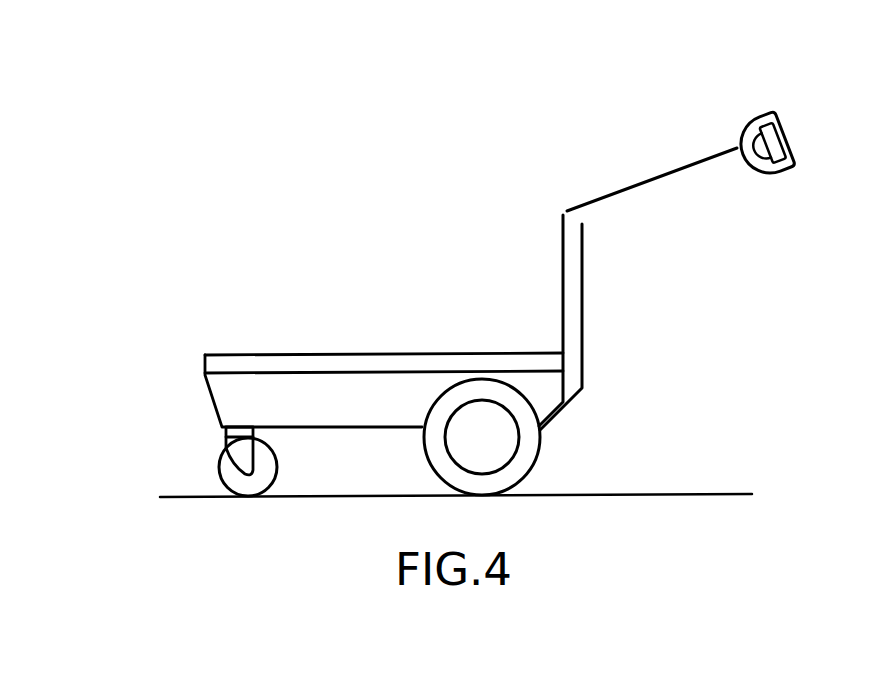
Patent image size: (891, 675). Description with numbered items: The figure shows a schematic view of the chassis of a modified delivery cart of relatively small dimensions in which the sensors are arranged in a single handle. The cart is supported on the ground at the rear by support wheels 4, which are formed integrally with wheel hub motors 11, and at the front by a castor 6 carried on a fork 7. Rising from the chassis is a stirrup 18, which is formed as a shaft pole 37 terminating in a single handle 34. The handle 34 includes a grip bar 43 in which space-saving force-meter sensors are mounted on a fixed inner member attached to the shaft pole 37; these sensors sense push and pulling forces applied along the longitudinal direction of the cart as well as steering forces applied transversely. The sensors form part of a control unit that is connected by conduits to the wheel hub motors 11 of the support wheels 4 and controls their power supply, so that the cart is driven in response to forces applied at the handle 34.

The rear support wheel 4 is at (515, 470).
The front castor 6 is at (262, 477).
The caster fork 7 is at (228, 447).
The wheel hub motor 11 is at (500, 452).
The stirrup 18 is at (596, 286).
The handle 34 is at (800, 118).
The shaft pole 37 is at (646, 190).
The grip bar 43 is at (793, 145).